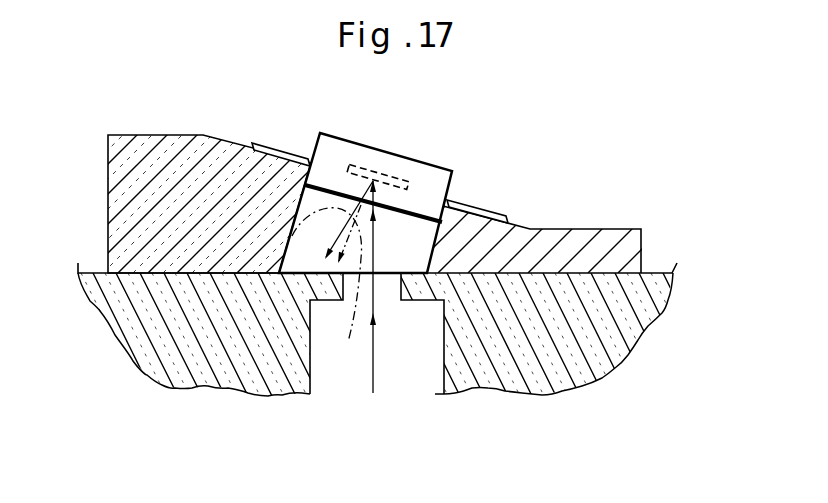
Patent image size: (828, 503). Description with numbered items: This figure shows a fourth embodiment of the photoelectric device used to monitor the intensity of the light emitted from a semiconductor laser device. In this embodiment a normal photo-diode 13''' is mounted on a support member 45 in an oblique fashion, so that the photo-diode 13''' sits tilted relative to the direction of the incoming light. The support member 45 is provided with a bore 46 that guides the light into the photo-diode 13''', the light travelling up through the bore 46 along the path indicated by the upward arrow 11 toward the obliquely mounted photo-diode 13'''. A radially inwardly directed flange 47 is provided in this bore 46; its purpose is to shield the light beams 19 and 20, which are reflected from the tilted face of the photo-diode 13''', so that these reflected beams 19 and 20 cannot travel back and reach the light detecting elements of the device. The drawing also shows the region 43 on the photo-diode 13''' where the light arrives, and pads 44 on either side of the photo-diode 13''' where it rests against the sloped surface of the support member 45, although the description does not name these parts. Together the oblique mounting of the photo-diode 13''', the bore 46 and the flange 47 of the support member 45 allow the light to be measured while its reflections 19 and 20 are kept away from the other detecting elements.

The laser beam / optical axis direction 11 is at (374, 374).
The photo-diode 13''' is at (407, 201).
The light beam 19 is at (327, 292).
The light beam 20 is at (332, 223).
The aperture slot 43 is at (381, 170).
The support pads 44 is at (285, 152).
The support member 45 is at (656, 220).
The bore 46 is at (311, 374).
The radially inwardly directed flange 47 is at (398, 296).